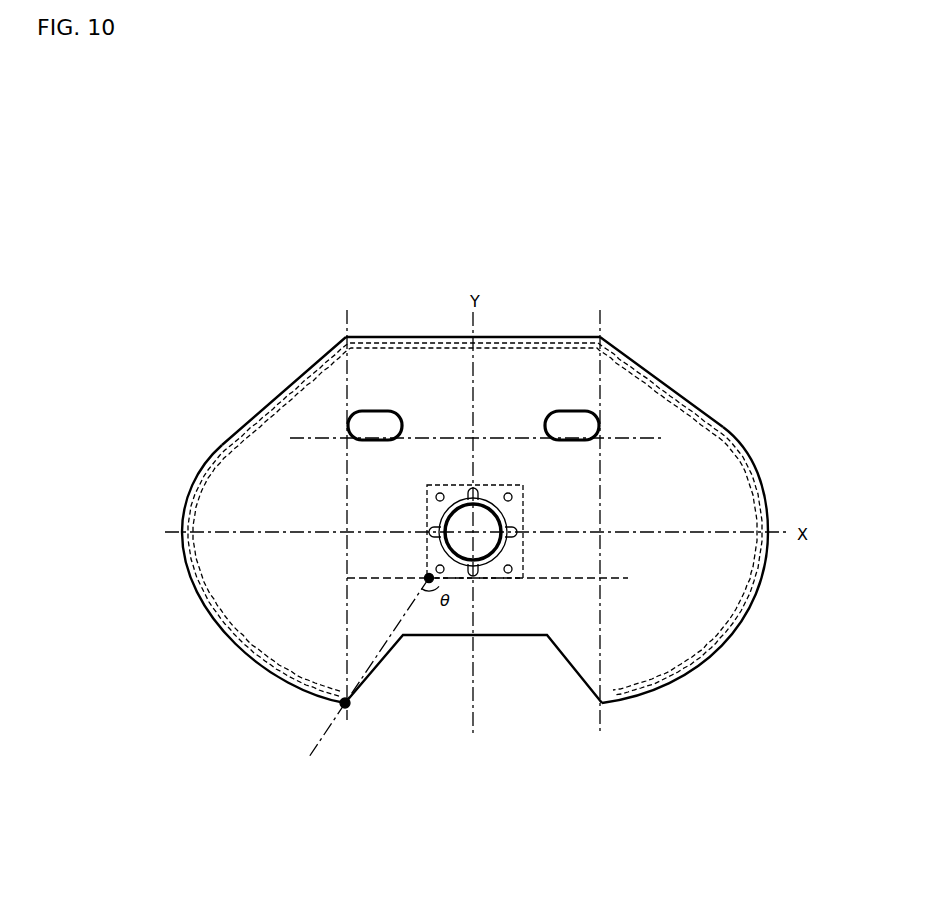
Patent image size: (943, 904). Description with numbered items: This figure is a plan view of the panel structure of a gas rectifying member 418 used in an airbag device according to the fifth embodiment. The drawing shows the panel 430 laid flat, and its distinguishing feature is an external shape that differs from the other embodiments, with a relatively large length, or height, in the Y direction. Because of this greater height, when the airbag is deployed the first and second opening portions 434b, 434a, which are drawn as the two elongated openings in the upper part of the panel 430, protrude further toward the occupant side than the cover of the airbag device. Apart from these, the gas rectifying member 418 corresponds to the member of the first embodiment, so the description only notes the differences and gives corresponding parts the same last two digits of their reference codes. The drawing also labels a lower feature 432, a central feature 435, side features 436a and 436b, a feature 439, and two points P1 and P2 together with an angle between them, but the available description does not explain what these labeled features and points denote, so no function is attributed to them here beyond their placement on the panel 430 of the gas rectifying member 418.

The gas rectifying member 418 is at (670, 382).
The panel 430 is at (425, 337).
The notch 432 is at (568, 670).
The second opening portion 434a is at (380, 411).
The first opening portion 434b is at (577, 411).
The central boss 435 is at (507, 520).
The curved side edge 436a is at (222, 445).
The curved side edge 436b is at (723, 650).
The mounting portion 439 is at (428, 545).
The point P1 is at (345, 708).
The point P2 is at (429, 578).